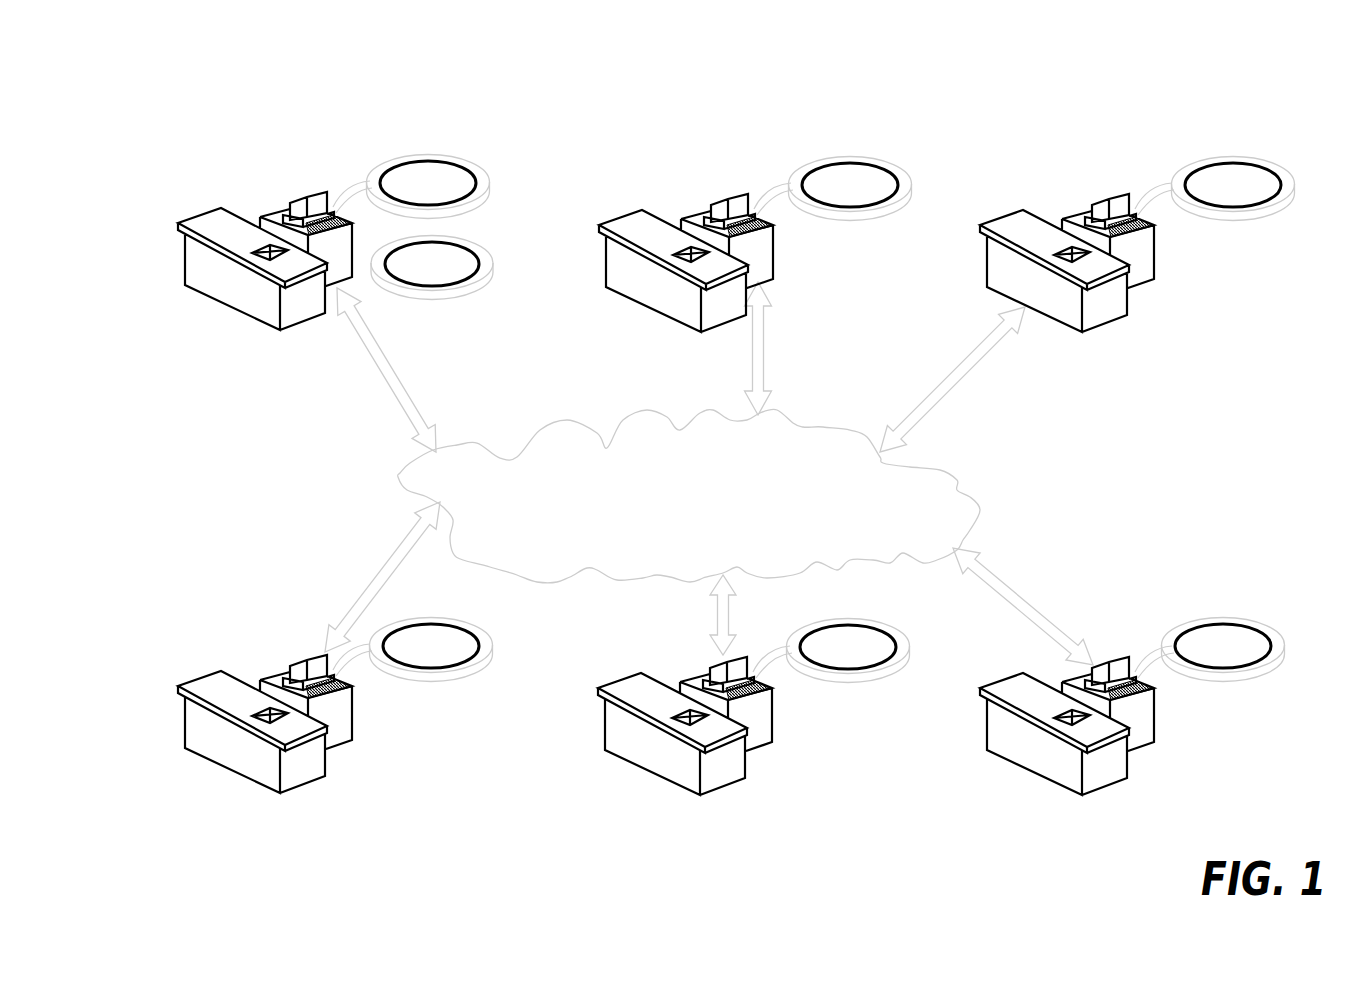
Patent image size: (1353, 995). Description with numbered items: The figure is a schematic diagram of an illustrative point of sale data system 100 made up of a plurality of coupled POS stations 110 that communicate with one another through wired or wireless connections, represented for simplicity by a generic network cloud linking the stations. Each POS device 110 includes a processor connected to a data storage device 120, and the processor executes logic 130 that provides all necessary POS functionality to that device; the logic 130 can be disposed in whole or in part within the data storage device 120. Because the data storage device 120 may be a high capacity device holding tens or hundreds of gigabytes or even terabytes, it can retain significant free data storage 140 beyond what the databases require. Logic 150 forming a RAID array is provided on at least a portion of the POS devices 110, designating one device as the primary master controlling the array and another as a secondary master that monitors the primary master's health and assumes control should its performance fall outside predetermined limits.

The point of sale data system 100 is at (222, 173).
The POS station 110 is at (297, 197).
The data storage device 120 is at (487, 180).
The logic 130 is at (415, 182).
The free data storage 140 is at (368, 182).
The RAID array logic 150 is at (472, 242).